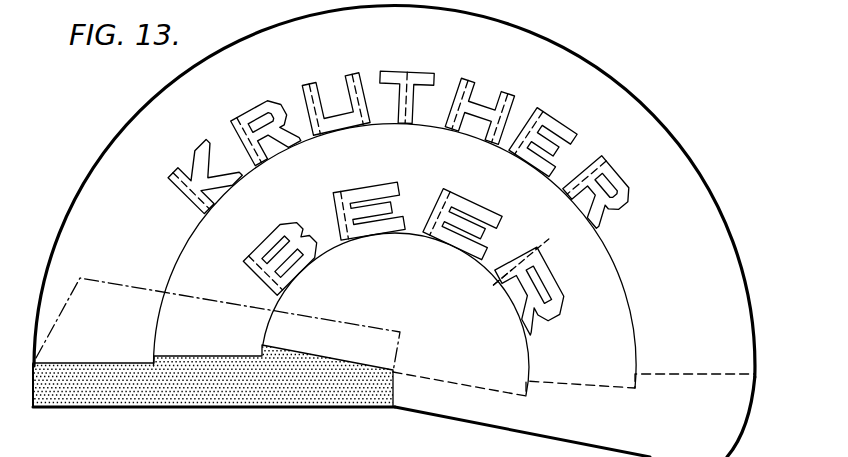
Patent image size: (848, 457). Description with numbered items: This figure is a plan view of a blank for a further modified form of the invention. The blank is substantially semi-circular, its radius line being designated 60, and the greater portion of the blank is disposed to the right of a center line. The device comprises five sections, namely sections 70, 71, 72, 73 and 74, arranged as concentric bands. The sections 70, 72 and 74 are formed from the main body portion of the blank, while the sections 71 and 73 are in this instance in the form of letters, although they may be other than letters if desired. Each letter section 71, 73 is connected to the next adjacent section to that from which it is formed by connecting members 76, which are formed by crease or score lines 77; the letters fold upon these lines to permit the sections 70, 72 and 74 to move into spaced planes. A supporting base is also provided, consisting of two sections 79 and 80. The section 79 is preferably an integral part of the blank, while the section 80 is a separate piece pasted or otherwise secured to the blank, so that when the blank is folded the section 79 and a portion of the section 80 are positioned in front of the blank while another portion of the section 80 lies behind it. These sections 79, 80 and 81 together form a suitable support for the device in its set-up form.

The radius line 60 is at (70, 363).
The section 70 is at (650, 141).
The section 71 is at (627, 197).
The section 72 is at (607, 293).
The section 73 is at (550, 272).
The section 74 is at (396, 314).
The connecting member 76 is at (546, 241).
The crease or score line 77 is at (512, 250).
The section of supporting base 79 is at (468, 418).
The section of supporting base 80 is at (350, 392).
The section of supporting base 81 is at (135, 409).